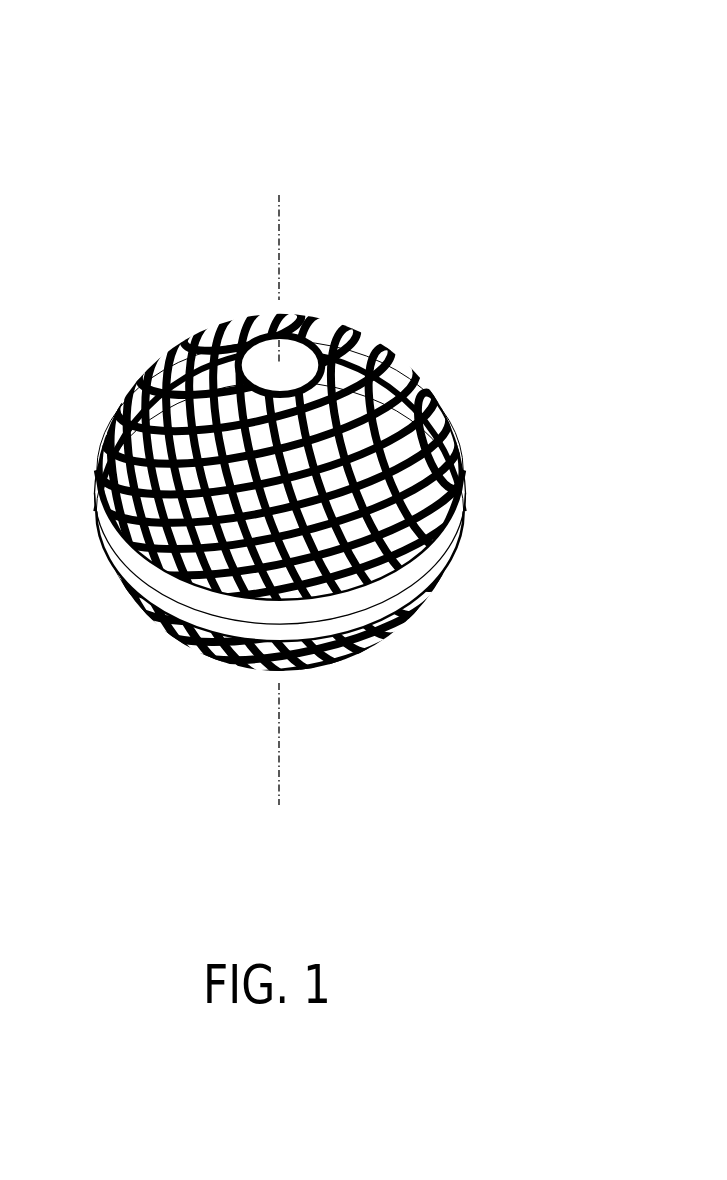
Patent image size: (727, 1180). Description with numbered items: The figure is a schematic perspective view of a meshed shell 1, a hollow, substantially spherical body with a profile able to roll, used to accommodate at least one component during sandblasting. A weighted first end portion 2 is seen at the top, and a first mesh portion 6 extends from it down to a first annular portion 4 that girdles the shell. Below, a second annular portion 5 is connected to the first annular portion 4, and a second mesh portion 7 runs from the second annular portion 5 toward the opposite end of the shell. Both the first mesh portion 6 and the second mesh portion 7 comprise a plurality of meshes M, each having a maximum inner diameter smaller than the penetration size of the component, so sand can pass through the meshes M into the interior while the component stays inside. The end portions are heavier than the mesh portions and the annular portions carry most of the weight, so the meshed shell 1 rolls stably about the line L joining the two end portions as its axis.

The meshed shell 1 is at (334, 410).
The first end portion 2 is at (260, 352).
The first annular portion 4 is at (445, 533).
The second annular portion 5 is at (445, 557).
The first mesh portion 6 is at (323, 310).
The second mesh portion 7 is at (410, 648).
The line L is at (280, 476).
The meshes M is at (135, 412).